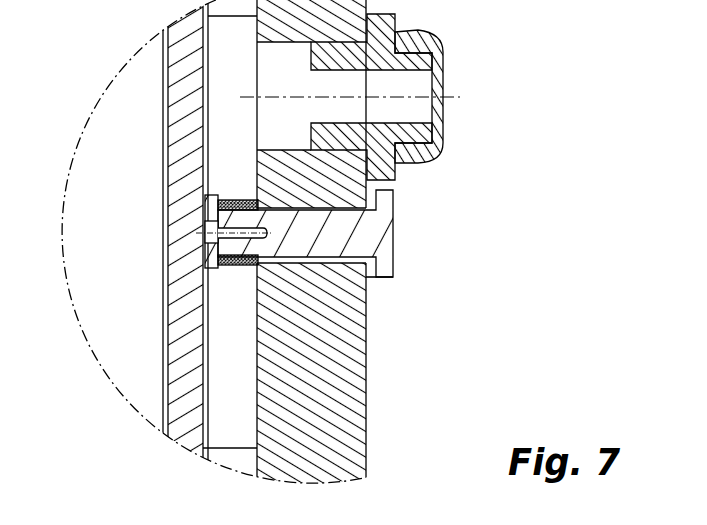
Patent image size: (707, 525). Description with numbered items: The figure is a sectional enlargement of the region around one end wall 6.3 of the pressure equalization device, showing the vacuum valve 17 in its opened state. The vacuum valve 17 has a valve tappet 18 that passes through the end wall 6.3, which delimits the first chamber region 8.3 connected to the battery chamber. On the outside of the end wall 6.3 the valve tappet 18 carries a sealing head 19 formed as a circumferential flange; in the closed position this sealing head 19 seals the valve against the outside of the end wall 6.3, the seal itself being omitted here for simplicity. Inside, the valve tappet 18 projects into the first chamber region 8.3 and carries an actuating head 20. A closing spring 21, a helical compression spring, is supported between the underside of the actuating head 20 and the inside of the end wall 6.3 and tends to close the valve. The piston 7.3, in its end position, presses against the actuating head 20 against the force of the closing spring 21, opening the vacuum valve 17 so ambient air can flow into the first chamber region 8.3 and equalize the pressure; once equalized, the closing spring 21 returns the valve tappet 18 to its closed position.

The piston 7.3 is at (167, 105).
The first chamber region 8.3 is at (248, 403).
The end wall 6.3 is at (341, 366).
The valve tappet 18 is at (340, 244).
The closing spring 21 is at (247, 200).
The actuating head 20 is at (212, 272).
The sealing head 19 is at (395, 277).
The vacuum valve 17 is at (383, 290).